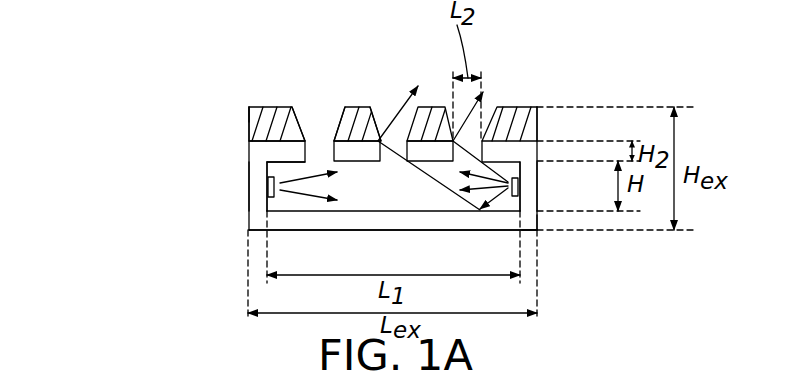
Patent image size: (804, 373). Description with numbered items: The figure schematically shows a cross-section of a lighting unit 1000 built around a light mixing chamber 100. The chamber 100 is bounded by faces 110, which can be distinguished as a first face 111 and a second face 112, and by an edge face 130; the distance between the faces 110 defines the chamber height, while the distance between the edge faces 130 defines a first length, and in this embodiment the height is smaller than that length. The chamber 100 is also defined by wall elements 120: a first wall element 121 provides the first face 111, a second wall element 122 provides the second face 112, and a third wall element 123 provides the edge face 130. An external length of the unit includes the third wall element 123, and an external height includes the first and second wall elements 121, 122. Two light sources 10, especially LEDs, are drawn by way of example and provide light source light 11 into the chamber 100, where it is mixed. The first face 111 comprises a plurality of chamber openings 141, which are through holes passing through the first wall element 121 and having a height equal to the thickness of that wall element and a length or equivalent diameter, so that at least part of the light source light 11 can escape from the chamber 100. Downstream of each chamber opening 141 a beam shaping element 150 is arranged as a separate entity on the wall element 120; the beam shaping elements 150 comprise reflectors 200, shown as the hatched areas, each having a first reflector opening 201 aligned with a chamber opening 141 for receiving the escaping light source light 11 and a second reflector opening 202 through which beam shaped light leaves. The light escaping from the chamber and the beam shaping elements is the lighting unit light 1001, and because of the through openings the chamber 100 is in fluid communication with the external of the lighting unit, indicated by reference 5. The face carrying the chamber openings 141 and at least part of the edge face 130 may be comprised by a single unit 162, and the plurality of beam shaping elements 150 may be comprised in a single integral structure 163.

The external of the lighting unit 5 is at (152, 80).
The light source 10 is at (263, 186).
The light source light 11 is at (312, 198).
The light mixing chamber 100 is at (512, 205).
The faces 110 is at (393, 216).
The first face 111 is at (430, 158).
The second face 112 is at (385, 209).
The wall element 120 is at (292, 152).
The first wall element 121 is at (393, 168).
The second wall element 122 is at (327, 228).
The third wall element 123 is at (257, 205).
The edge face 130 is at (253, 205).
The chamber opening 141 is at (313, 162).
The beam shaping element 150 is at (315, 85).
The reflector 200 is at (357, 106).
The first reflector opening 201 is at (266, 166).
The second reflector opening 202 is at (300, 112).
The single unit 162 is at (540, 234).
The single integral structure 163 is at (250, 103).
The lighting unit 1000 is at (587, 72).
The lighting unit light 1001 is at (468, 120).